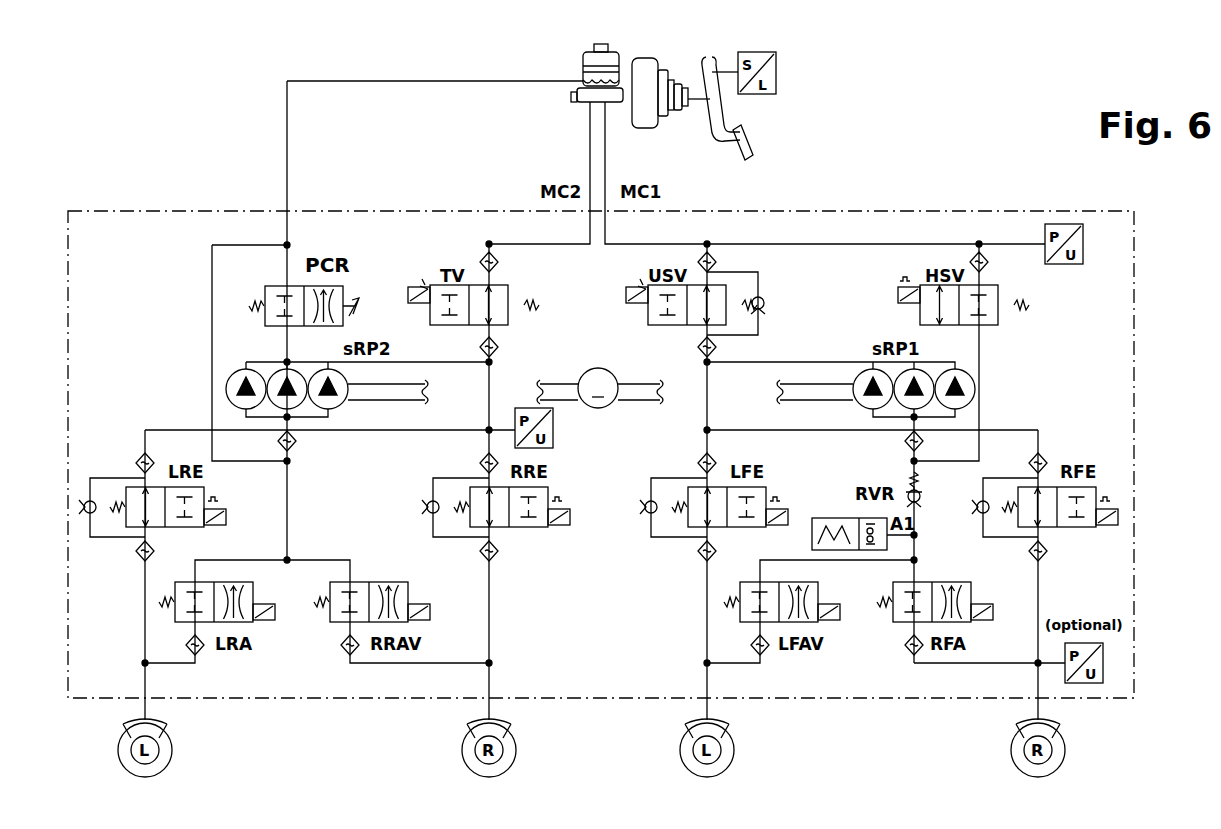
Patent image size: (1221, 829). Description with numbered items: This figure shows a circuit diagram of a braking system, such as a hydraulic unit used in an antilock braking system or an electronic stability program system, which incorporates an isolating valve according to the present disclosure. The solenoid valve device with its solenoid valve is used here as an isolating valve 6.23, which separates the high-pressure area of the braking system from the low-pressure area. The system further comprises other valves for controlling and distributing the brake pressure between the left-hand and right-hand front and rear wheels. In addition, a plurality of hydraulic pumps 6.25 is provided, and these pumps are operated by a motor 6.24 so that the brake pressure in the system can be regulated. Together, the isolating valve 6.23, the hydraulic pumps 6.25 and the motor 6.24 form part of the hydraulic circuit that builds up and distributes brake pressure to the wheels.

The isolating valve 6.23 is at (435, 288).
The motor 6.24 is at (600, 408).
The hydraulic pumps 6.25 is at (304, 385).